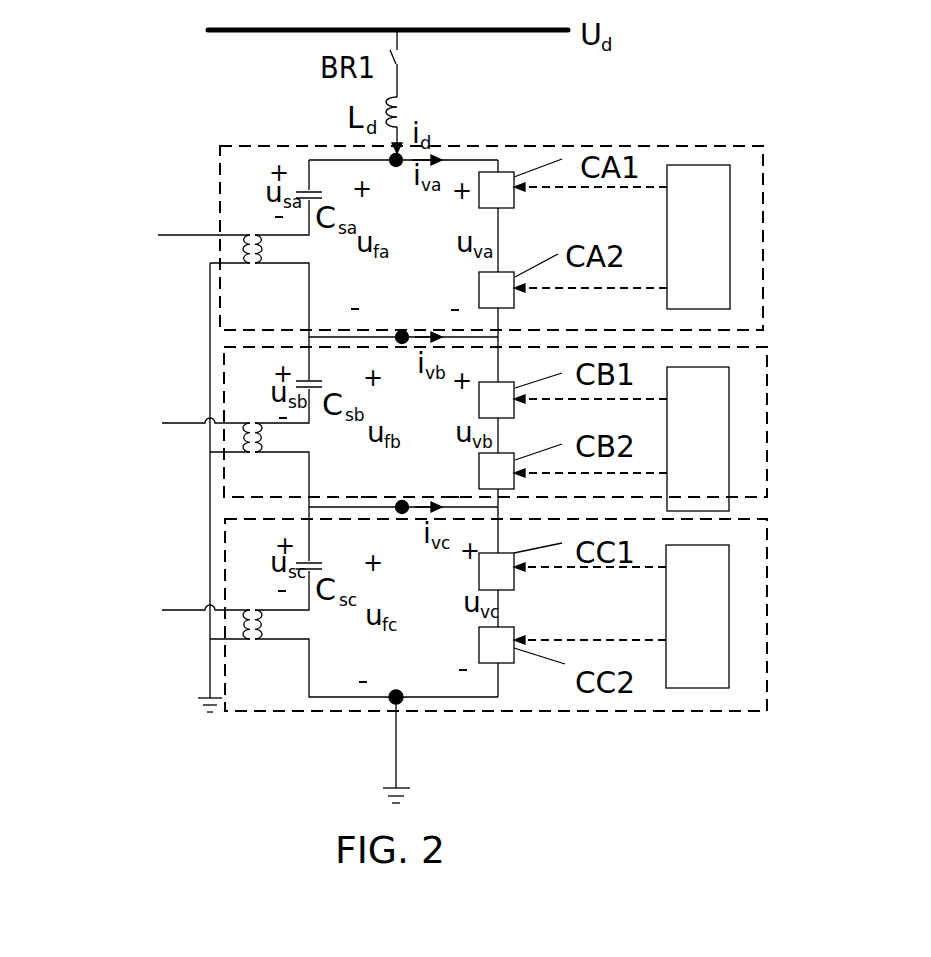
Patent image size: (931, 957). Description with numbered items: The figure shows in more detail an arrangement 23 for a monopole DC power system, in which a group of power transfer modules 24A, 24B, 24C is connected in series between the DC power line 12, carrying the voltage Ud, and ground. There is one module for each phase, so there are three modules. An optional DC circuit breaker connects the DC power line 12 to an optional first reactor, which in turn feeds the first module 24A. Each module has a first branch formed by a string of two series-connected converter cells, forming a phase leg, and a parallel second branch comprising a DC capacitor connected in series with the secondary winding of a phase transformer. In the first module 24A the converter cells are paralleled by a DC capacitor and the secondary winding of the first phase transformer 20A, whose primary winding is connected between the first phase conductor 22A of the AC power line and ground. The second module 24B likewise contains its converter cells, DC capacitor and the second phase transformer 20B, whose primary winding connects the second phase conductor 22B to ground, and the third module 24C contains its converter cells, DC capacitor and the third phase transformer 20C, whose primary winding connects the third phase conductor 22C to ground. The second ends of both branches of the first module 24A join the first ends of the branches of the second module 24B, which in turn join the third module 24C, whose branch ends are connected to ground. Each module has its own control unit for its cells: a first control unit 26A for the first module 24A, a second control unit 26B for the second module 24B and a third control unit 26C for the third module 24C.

The DC power line 12 is at (263, 25).
The arrangement 23 is at (646, 94).
The first module 24A is at (588, 147).
The second module 24B is at (227, 363).
The third module 24C is at (392, 711).
The first phase conductor 22A is at (168, 232).
The second phase conductor 22B is at (170, 423).
The third phase conductor 22C is at (170, 610).
The first phase transformer 20A is at (270, 262).
The second phase transformer 20B is at (270, 457).
The third phase transformer 20C is at (271, 644).
The first control unit 26A is at (699, 237).
The second control unit 26B is at (698, 439).
The third control unit 26C is at (698, 616).